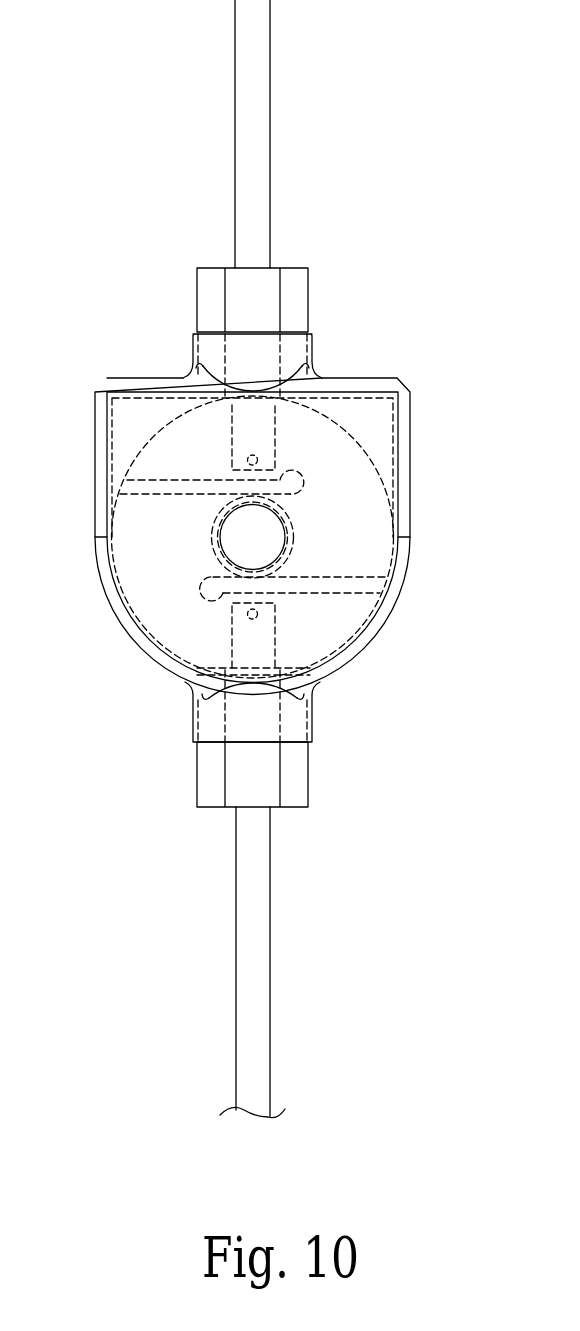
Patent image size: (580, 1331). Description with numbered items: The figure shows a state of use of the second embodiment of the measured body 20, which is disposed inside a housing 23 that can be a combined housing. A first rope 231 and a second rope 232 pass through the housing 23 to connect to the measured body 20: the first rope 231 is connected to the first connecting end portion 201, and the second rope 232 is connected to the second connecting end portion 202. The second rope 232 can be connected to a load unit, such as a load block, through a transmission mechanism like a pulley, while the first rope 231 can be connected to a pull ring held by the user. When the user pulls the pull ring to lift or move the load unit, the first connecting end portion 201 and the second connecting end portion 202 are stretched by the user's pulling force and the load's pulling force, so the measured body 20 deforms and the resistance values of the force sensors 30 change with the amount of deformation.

The measured body 20 is at (170, 553).
The housing 23 is at (352, 388).
The force sensor 30 is at (262, 520).
The first connecting end portion 201 is at (223, 665).
The second connecting end portion 202 is at (213, 407).
The first rope 231 is at (262, 950).
The second rope 232 is at (259, 117).